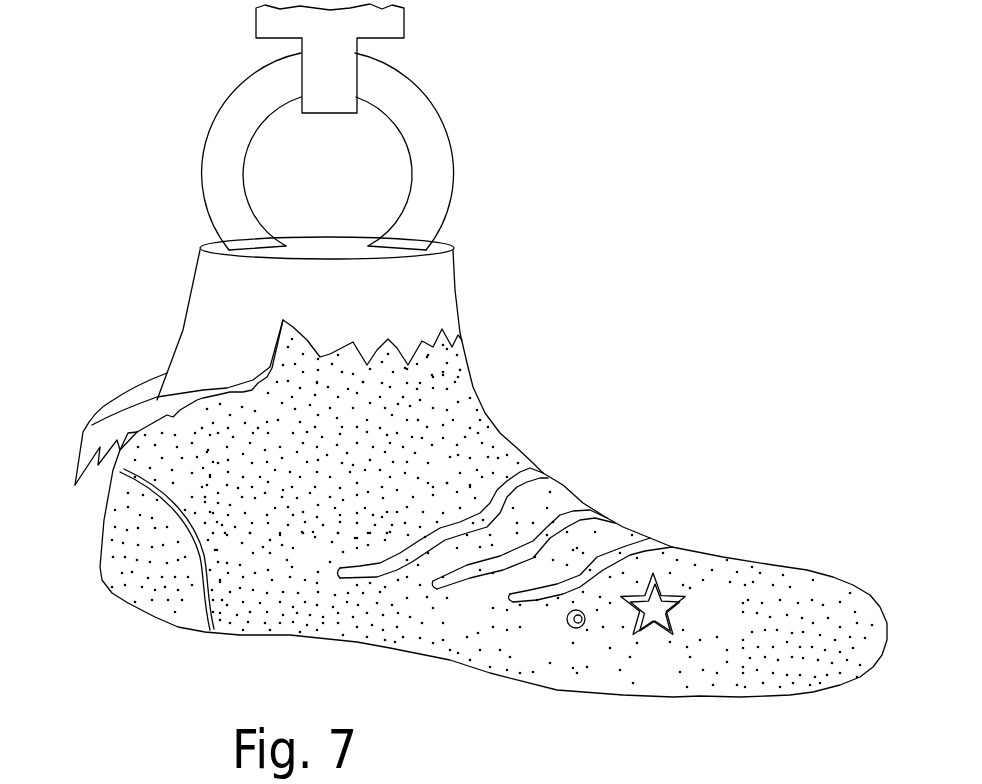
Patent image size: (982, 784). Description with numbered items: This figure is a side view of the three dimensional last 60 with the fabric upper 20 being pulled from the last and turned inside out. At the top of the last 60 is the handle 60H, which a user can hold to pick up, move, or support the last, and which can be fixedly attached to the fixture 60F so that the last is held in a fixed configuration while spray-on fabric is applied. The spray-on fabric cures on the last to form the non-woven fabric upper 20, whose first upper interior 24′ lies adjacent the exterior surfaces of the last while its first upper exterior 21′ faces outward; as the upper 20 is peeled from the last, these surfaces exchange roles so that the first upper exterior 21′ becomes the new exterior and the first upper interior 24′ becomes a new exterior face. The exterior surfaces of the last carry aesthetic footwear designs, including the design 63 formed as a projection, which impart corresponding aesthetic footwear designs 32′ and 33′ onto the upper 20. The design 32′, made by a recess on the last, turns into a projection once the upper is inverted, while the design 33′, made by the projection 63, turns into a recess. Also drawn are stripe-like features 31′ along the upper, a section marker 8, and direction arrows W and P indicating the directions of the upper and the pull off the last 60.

The three dimensional last 60 is at (205, 273).
The handle 60H is at (440, 182).
The fixture 60F is at (405, 27).
The fabric upper 20 is at (582, 441).
The first upper exterior 21′ is at (453, 388).
The first upper interior 24′ is at (88, 440).
The stripe elements 31′ is at (432, 540).
The aesthetic footwear design 32′ is at (583, 622).
The aesthetic footwear design 33′ is at (661, 630).
The section line 8 is at (516, 620).
The width direction W is at (702, 525).
The pull direction P is at (83, 497).
The aesthetic footwear design 63 is at (566, 782).